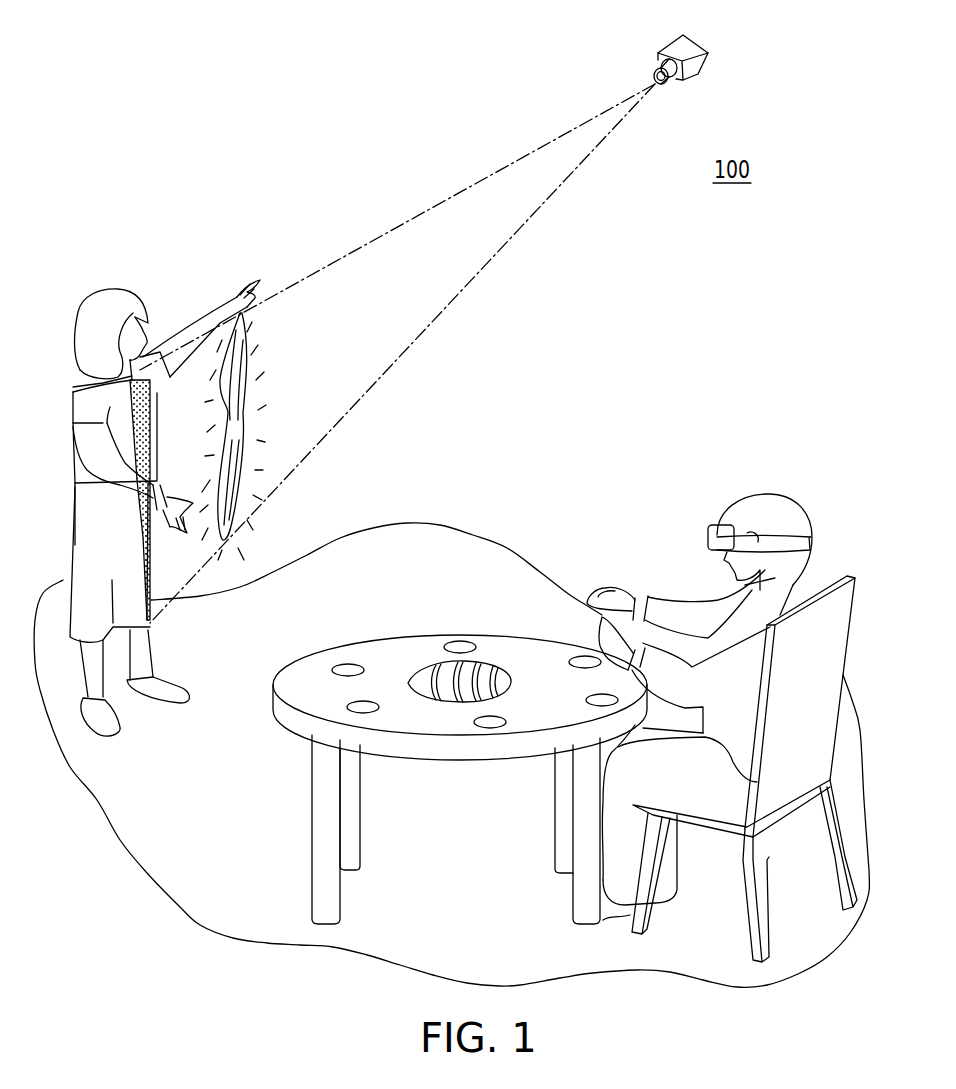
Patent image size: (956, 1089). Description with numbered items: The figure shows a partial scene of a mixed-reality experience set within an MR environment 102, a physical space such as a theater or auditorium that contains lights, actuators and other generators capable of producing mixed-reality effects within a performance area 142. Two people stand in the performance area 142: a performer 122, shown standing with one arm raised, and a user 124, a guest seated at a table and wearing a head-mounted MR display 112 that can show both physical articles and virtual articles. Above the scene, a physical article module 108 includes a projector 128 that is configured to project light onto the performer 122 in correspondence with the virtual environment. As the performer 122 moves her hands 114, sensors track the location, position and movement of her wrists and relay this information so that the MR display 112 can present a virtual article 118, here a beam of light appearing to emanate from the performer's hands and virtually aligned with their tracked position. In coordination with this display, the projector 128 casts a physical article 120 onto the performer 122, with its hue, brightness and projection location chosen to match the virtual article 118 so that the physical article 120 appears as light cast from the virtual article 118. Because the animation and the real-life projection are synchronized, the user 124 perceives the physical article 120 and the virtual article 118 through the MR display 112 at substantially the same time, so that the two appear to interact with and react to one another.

The MR environment 102 is at (455, 70).
The physical article module 108 is at (712, 49).
The MR display 112 is at (714, 527).
The sensors 114 is at (217, 298).
The virtual article 118 is at (254, 368).
The physical article 120 is at (73, 387).
The performer 122 is at (93, 323).
The user 124 is at (728, 692).
The projector 128 is at (680, 42).
The performance area 142 is at (466, 565).